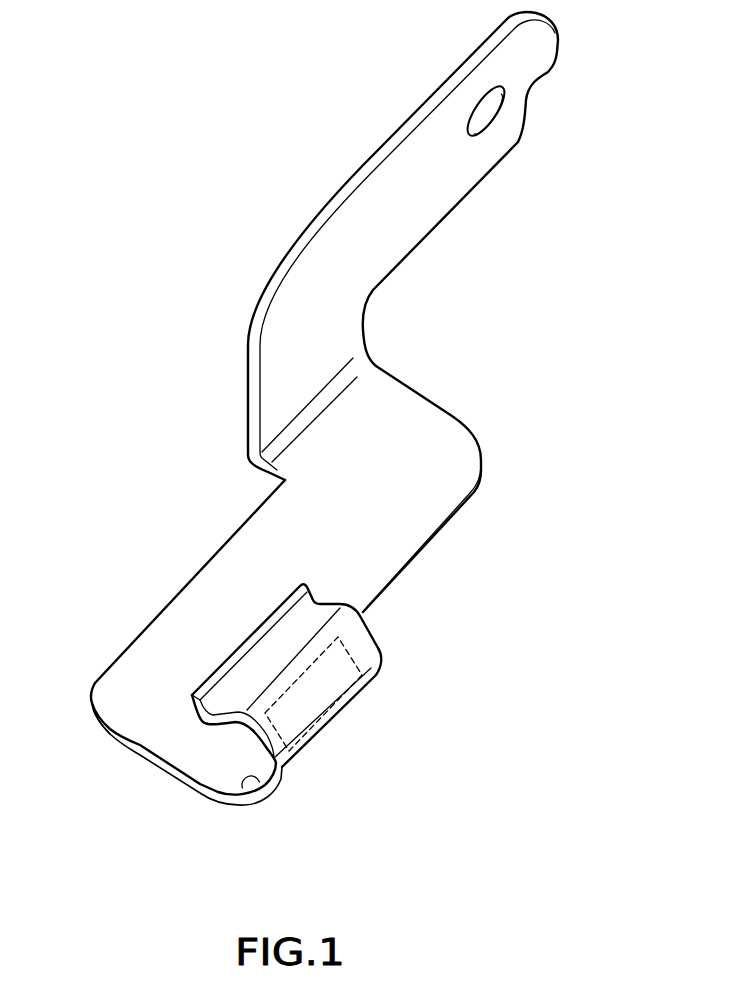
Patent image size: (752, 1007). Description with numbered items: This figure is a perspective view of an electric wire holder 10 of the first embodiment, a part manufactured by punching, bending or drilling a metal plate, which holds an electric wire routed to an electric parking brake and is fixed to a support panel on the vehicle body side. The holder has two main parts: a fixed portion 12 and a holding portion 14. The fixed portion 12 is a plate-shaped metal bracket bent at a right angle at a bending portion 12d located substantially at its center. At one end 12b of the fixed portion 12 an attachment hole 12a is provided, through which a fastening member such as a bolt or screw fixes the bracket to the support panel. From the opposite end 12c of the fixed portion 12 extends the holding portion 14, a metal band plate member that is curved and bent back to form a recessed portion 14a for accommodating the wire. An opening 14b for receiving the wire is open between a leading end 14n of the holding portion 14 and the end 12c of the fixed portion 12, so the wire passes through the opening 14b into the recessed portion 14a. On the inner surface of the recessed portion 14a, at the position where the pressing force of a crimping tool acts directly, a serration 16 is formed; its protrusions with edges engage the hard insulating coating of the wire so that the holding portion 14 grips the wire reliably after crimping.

The electric wire holder 10 is at (332, 441).
The fixed portion 12 is at (435, 232).
The attachment hole 12a is at (490, 118).
The end 12b is at (548, 71).
The end 12c is at (205, 763).
The bending portion 12d is at (343, 392).
The holding portion 14 is at (293, 646).
The recessed portion 14a is at (252, 776).
The opening 14b is at (195, 745).
The leading end 14n is at (262, 658).
The serration 16 is at (323, 697).